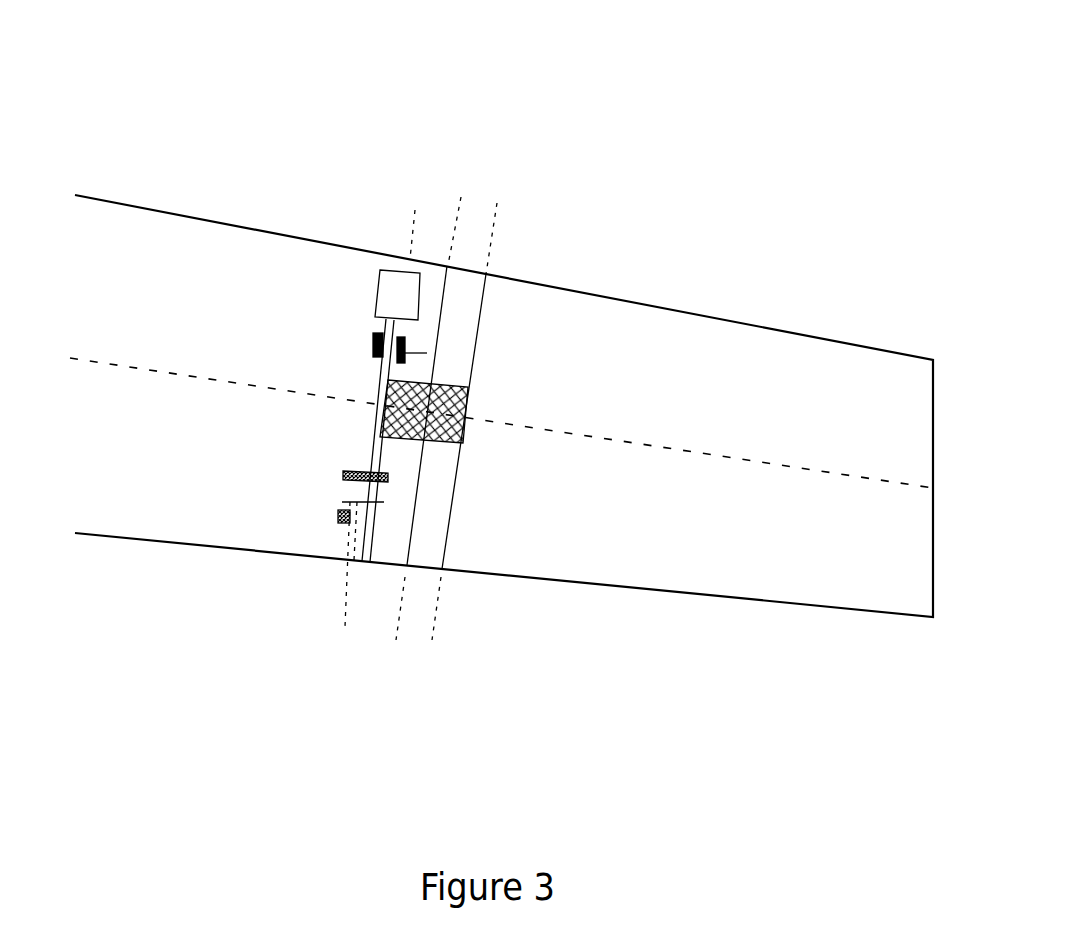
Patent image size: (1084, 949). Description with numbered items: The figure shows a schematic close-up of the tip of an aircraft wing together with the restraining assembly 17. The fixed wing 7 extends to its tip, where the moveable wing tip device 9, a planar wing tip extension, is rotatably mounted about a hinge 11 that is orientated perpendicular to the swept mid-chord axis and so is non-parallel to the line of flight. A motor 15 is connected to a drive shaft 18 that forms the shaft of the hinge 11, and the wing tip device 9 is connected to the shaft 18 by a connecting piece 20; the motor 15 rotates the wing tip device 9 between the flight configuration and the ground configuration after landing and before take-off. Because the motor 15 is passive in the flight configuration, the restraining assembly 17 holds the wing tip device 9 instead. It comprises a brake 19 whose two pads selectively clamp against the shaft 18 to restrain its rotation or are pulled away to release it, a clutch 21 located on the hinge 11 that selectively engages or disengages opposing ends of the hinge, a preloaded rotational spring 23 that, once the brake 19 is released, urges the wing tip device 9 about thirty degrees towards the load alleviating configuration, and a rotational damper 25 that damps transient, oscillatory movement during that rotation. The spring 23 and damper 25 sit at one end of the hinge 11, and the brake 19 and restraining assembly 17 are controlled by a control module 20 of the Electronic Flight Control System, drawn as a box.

The fixed wing 7 is at (81, 437).
The wing tip device 9 is at (694, 543).
The hinge 11 is at (345, 600).
The motor 15 is at (398, 285).
The restraining assembly 17 is at (272, 192).
The drive shaft 18 is at (368, 447).
The brake 19 is at (367, 337).
The connecting piece 20 is at (380, 290).
The clutch 21 is at (343, 476).
The rotational spring 23 is at (372, 520).
The rotational damper 25 is at (343, 525).